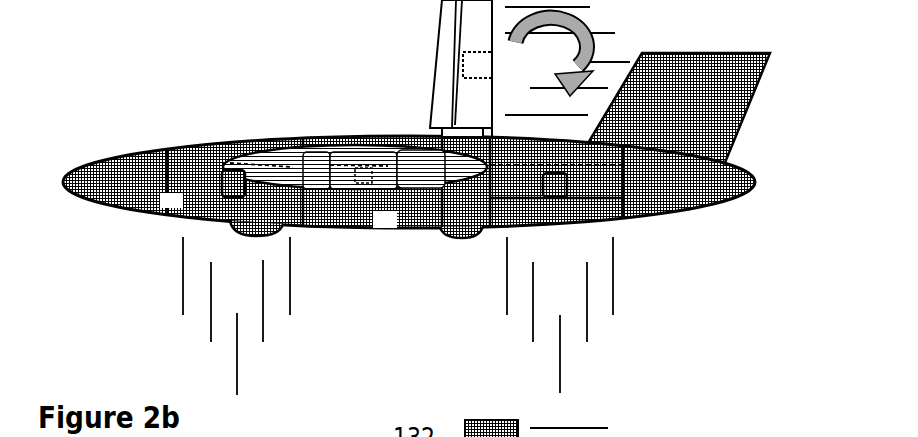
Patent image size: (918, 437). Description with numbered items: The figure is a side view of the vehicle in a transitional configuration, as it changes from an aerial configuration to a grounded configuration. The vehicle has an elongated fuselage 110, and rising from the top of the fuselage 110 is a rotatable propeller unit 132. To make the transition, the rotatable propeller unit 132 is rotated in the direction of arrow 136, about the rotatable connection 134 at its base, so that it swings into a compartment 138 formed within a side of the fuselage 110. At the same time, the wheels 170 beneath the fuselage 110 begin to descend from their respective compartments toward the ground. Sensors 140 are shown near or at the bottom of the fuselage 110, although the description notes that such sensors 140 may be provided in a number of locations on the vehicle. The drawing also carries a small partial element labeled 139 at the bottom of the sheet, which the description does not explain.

The fuselage 110 is at (595, 222).
The rotatable propeller unit 132 is at (430, 62).
The rotatable connection 134 is at (422, 128).
The arrow 136 is at (578, 48).
The compartment 138 is at (550, 137).
The mast module 139 is at (610, 436).
The sensors 140 is at (133, 209).
The wheels 170 is at (250, 238).